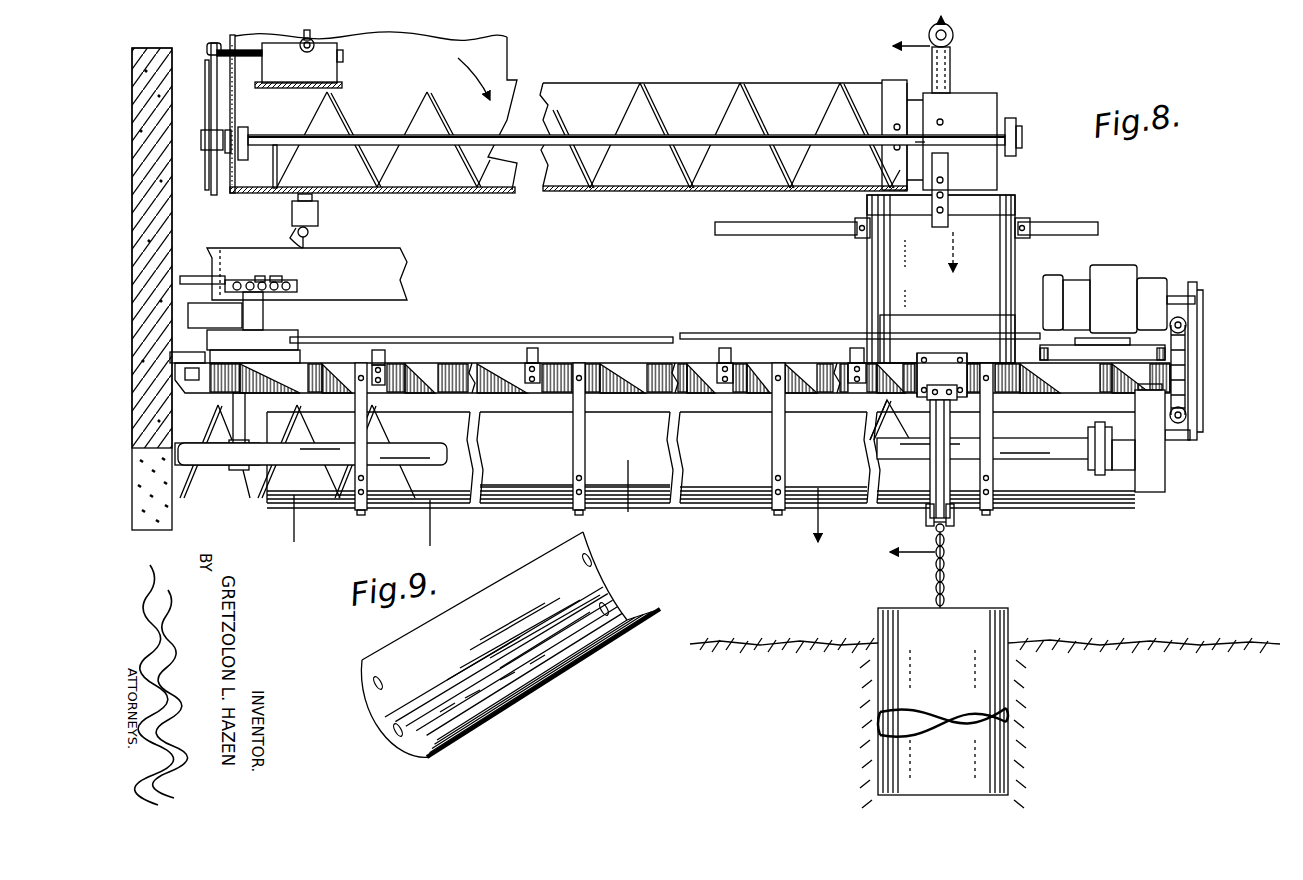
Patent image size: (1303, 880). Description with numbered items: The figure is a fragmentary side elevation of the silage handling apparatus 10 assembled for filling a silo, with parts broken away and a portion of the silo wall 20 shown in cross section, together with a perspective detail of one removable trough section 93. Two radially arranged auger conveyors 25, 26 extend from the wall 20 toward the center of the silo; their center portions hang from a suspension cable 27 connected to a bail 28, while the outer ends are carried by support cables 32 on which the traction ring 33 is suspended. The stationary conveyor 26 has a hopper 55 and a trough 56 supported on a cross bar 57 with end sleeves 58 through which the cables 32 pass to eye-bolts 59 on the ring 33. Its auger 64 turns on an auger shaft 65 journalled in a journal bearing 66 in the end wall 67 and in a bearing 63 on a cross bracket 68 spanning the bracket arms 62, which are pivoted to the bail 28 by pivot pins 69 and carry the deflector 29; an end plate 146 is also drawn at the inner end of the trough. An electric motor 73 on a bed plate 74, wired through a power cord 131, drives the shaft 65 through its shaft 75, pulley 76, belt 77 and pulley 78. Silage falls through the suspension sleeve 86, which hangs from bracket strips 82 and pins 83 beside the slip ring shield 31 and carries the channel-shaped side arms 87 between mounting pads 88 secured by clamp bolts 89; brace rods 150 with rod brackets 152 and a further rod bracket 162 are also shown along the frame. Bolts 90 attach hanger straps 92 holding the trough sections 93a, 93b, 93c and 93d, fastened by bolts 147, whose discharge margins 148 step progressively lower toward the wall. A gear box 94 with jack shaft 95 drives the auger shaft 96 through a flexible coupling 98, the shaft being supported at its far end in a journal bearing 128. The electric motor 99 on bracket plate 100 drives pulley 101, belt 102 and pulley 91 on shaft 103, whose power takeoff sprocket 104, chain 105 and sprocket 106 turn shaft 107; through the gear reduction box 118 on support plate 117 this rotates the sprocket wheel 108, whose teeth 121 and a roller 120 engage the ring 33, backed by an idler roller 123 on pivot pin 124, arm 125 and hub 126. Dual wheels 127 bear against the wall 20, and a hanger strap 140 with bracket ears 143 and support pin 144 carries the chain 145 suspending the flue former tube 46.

In FIG. 8, the conveying apparatus 10 is at (898, 298).
In FIG. 8, the silo wall 20 is at (168, 508).
In FIG. 8, the conveyor 25 is at (745, 508).
In FIG. 8, the conveyor 26 is at (686, 200).
In FIG. 8, the suspension cable 27 is at (954, 33).
In FIG. 8, the bail 28 is at (950, 84).
In FIG. 8, the deflector 29 is at (997, 112).
In FIG. 8, the slip ring shield 31 is at (867, 286).
In FIG. 8, the support cables 32 is at (290, 236).
In FIG. 8, the traction ring 33 is at (378, 258).
In FIG. 8, the flue former or tube 46 is at (1008, 632).
In FIG. 8, the hopper 55 is at (510, 67).
In FIG. 8, the trough 56 is at (575, 192).
In FIG. 8, the cross bar 57 is at (306, 198).
In FIG. 8, the end sleeves 58 is at (302, 214).
In FIG. 8, the eye-bolts 59 is at (300, 236).
In FIG. 8, the bracket arms 62 is at (918, 148).
In FIG. 8, the bearing 63 is at (1014, 146).
In FIG. 8, the auger 64 is at (632, 110).
In FIG. 8, the auger shaft 65 is at (636, 136).
In FIG. 8, the journal bearing 66 is at (248, 132).
In FIG. 8, the end wall 67 is at (273, 167).
In FIG. 8, the cross bracket 68 is at (1010, 156).
In FIG. 8, the pivot pins 69 is at (944, 122).
In FIG. 8, the electric motor 73 is at (327, 74).
In FIG. 8, the bed plate 74 is at (280, 89).
In FIG. 8, the shaft 75 is at (242, 57).
In FIG. 8, the pulley 76 is at (208, 50).
In FIG. 8, the belt 77 is at (205, 82).
In FIG. 8, the pulley 78 is at (211, 188).
In FIG. 8, the support bracket strips 82 is at (908, 205).
In FIG. 8, the pins 83 is at (946, 228).
In FIG. 8, the suspension sleeve 86 is at (990, 326).
In FIG. 8, the channel-shaped side arms 87 is at (698, 358).
In FIG. 8, the mounting pads 88 is at (942, 376).
In FIG. 8, the clamp bolts 89 is at (924, 372).
In FIG. 8, the bolts 90 is at (580, 380).
In FIG. 8, the pulley 91 is at (1203, 416).
In FIG. 8, the hanger straps 92 is at (367, 500).
In FIG. 9, the trough sections 93 is at (590, 660).
In FIG. 8, the trough section 93a is at (806, 480).
In FIG. 8, the trough section 93b is at (694, 491).
In FIG. 8, the trough section 93c is at (492, 491).
In FIG. 8, the trough section 93d is at (305, 460).
In FIG. 8, the gear box 94 is at (1158, 475).
In FIG. 8, the jack shaft 95 is at (1124, 440).
In FIG. 8, the shaft 96 is at (1022, 440).
In FIG. 8, the flexible coupling 98 is at (1102, 470).
In FIG. 8, the electric motor 99 is at (1116, 274).
In FIG. 8, the bracket plate 100 is at (1118, 350).
In FIG. 8, the pulley 101 is at (1198, 298).
In FIG. 8, the belt 102 is at (1197, 345).
In FIG. 8, the shaft 103 is at (1172, 440).
In FIG. 8, the power takeoff sprocket 104 is at (1186, 412).
In FIG. 8, the chain 105 is at (1186, 372).
In FIG. 8, the sprocket 106 is at (1186, 323).
In FIG. 8, the shaft 107 is at (480, 338).
In FIG. 8, the sprocket wheel 108 is at (276, 280).
In FIG. 8, the support plate 117 is at (308, 364).
In FIG. 8, the gear reduction box 118 is at (290, 332).
In FIG. 8, the roller 120 is at (260, 278).
In FIG. 8, the teeth 121 is at (296, 288).
In FIG. 8, the idler roller 123 is at (200, 278).
In FIG. 8, the pivot pin 124 is at (198, 305).
In FIG. 8, the arm 125 is at (196, 352).
In FIG. 8, the hub 126 is at (262, 311).
In FIG. 8, the dual wheels 127 is at (178, 372).
In FIG. 8, the journal bearing 128 is at (240, 470).
In FIG. 8, the power cord 131 is at (300, 48).
In FIG. 8, the hanger strap 140 is at (936, 470).
In FIG. 8, the bracket ears 143 is at (955, 518).
In FIG. 8, the support pin 144 is at (934, 528).
In FIG. 8, the chain 145 is at (950, 598).
In FIG. 8, the end plate 146 is at (920, 118).
In FIG. 8, the bolts 147 is at (580, 480).
In FIG. 8, the discharge margins 148 is at (486, 503).
In FIG. 8, the brace rod 150 is at (790, 226).
In FIG. 8, the rod bracket 152 is at (858, 236).
In FIG. 8, the rod bracket 162 is at (384, 356).